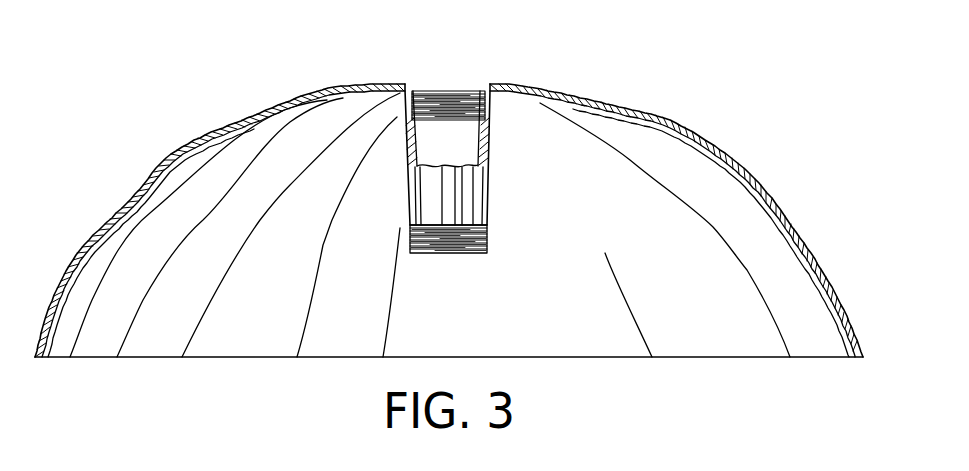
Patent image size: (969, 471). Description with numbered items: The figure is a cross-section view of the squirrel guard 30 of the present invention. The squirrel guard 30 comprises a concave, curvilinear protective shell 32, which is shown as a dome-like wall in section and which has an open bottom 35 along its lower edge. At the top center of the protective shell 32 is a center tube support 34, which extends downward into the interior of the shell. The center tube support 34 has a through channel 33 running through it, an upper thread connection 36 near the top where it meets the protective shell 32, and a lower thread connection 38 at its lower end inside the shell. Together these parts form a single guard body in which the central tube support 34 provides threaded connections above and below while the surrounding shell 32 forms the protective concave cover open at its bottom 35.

The squirrel guard 30 is at (753, 177).
The protective shell 32 is at (621, 107).
The through channel 33 is at (452, 155).
The center tube support 34 is at (487, 127).
The open bottom 35 is at (705, 357).
The upper thread connection 36 is at (433, 100).
The lower thread connection 38 is at (489, 243).